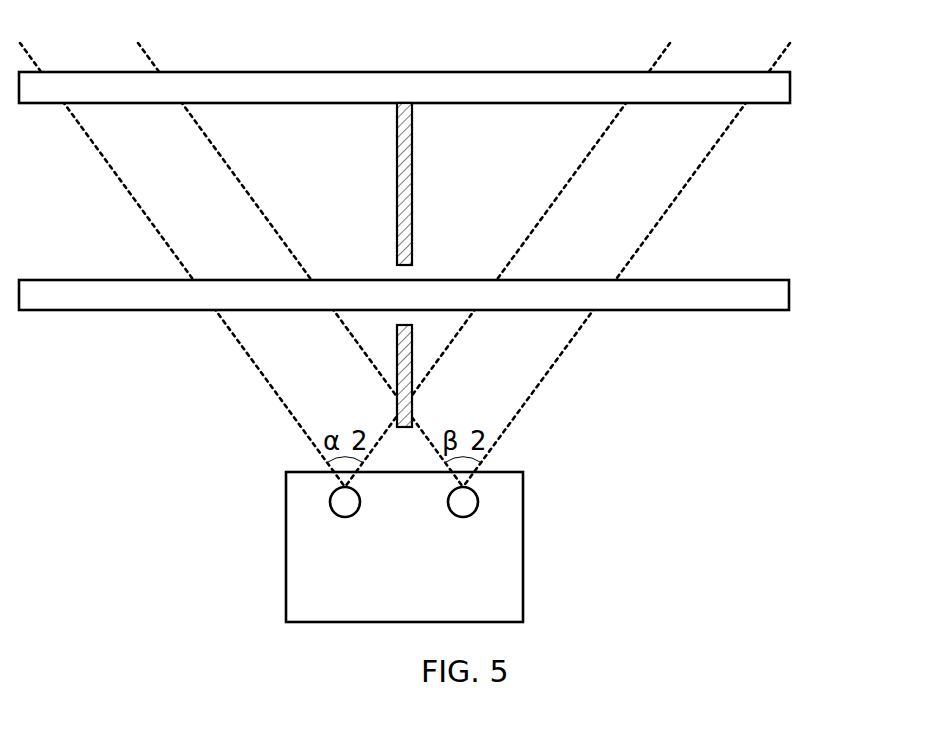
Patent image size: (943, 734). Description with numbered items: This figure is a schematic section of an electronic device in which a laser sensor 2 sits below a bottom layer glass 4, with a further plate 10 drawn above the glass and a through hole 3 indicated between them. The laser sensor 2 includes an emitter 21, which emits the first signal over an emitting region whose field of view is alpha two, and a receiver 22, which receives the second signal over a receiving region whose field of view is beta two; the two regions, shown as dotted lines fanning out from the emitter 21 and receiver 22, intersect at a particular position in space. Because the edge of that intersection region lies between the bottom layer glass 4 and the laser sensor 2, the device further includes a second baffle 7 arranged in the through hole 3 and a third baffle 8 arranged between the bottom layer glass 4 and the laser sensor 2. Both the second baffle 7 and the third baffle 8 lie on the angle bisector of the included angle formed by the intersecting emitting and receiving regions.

The first plate 10 is at (790, 86).
The bottom layer glass 4 is at (789, 293).
The second baffle 7 is at (412, 214).
The third baffle 8 is at (412, 375).
The through hole 3 is at (748, 192).
The laser sensor 2 is at (523, 528).
The emitter 21 is at (345, 517).
The receiver 22 is at (463, 517).